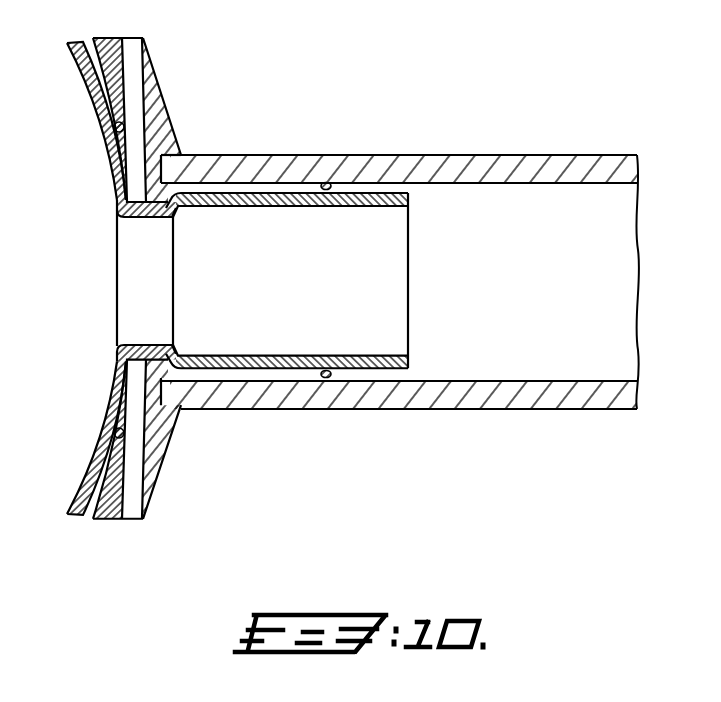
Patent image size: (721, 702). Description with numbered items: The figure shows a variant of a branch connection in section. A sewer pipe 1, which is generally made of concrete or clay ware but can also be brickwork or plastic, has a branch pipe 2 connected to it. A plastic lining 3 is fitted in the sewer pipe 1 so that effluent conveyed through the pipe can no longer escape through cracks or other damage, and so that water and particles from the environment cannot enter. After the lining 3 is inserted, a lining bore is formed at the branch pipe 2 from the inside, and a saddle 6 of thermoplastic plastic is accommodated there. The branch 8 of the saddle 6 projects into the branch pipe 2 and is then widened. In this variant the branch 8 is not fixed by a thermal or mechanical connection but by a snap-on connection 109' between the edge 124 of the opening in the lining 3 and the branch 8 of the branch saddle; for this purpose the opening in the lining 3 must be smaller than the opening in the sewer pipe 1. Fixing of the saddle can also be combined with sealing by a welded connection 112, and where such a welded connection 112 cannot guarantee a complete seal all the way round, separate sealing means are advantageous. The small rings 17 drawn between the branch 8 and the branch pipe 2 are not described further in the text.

The sewer pipe 1 is at (153, 80).
The branch pipe 2 is at (462, 170).
The plastic lining 3 is at (107, 517).
The saddle 6 is at (97, 107).
The branch 8 is at (265, 196).
The sealing ring 17 is at (333, 182).
The snap-on connection 109' is at (180, 279).
The welded connection 112 is at (107, 133).
The edge of the opening in lining 124 is at (172, 157).